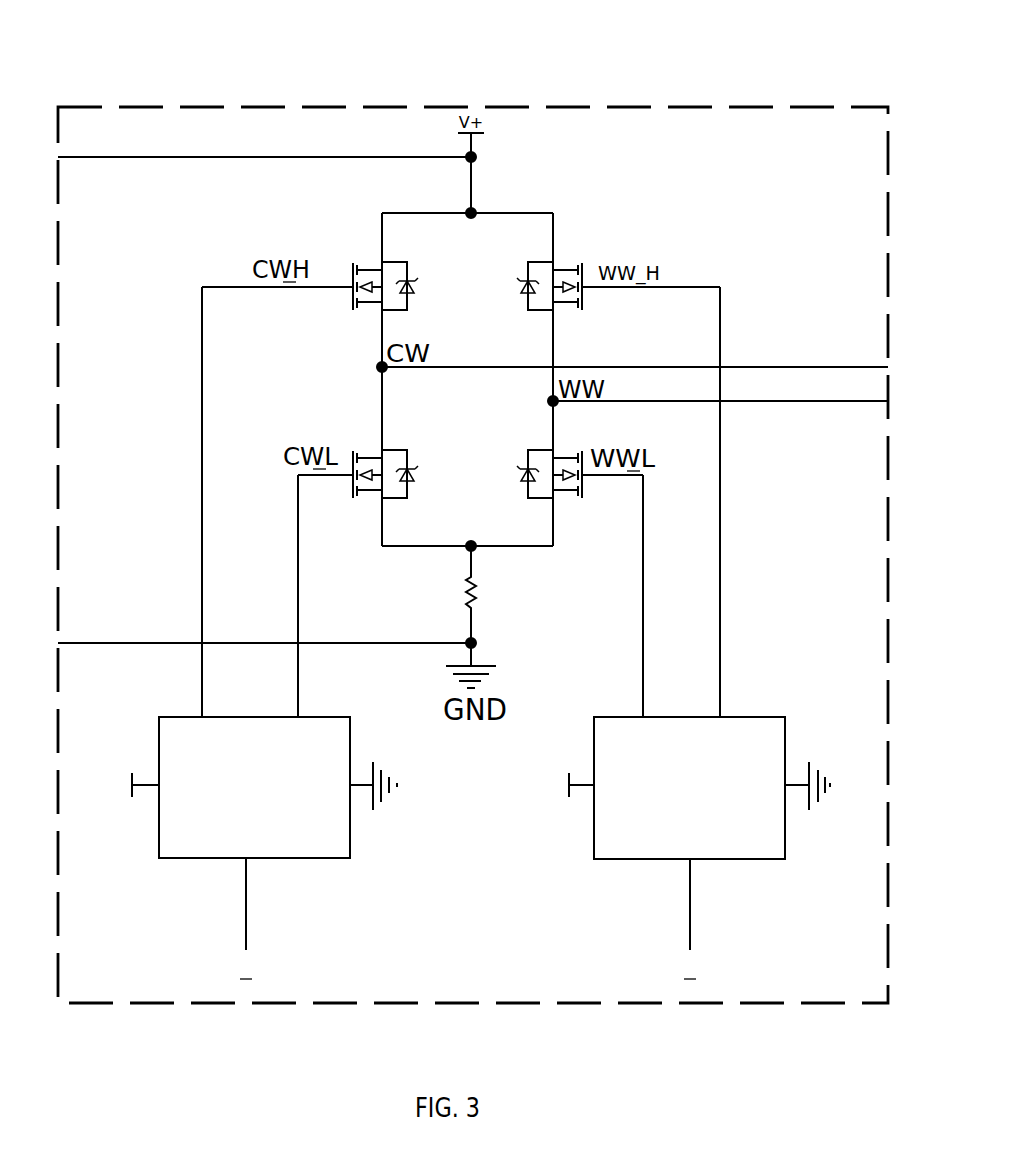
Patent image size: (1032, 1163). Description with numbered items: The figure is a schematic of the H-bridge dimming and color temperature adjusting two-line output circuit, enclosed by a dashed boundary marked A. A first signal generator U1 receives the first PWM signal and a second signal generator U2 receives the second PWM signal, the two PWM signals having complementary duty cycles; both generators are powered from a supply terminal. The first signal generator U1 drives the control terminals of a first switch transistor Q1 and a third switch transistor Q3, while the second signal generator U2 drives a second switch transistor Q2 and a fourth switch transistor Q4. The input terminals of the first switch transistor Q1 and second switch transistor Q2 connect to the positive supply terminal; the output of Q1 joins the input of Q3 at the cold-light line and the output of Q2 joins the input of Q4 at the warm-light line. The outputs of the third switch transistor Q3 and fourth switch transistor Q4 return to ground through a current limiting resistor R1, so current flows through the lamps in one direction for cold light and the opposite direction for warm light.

The motor drive circuit region A is at (572, 148).
The first switch transistor Q1 is at (386, 272).
The second switch transistor Q2 is at (548, 272).
The third switch transistor Q3 is at (386, 460).
The fourth switch transistor Q4 is at (548, 460).
The current limiting resistor R1 is at (487, 594).
The first signal generator U1 is at (269, 849).
The second signal generator U2 is at (701, 849).